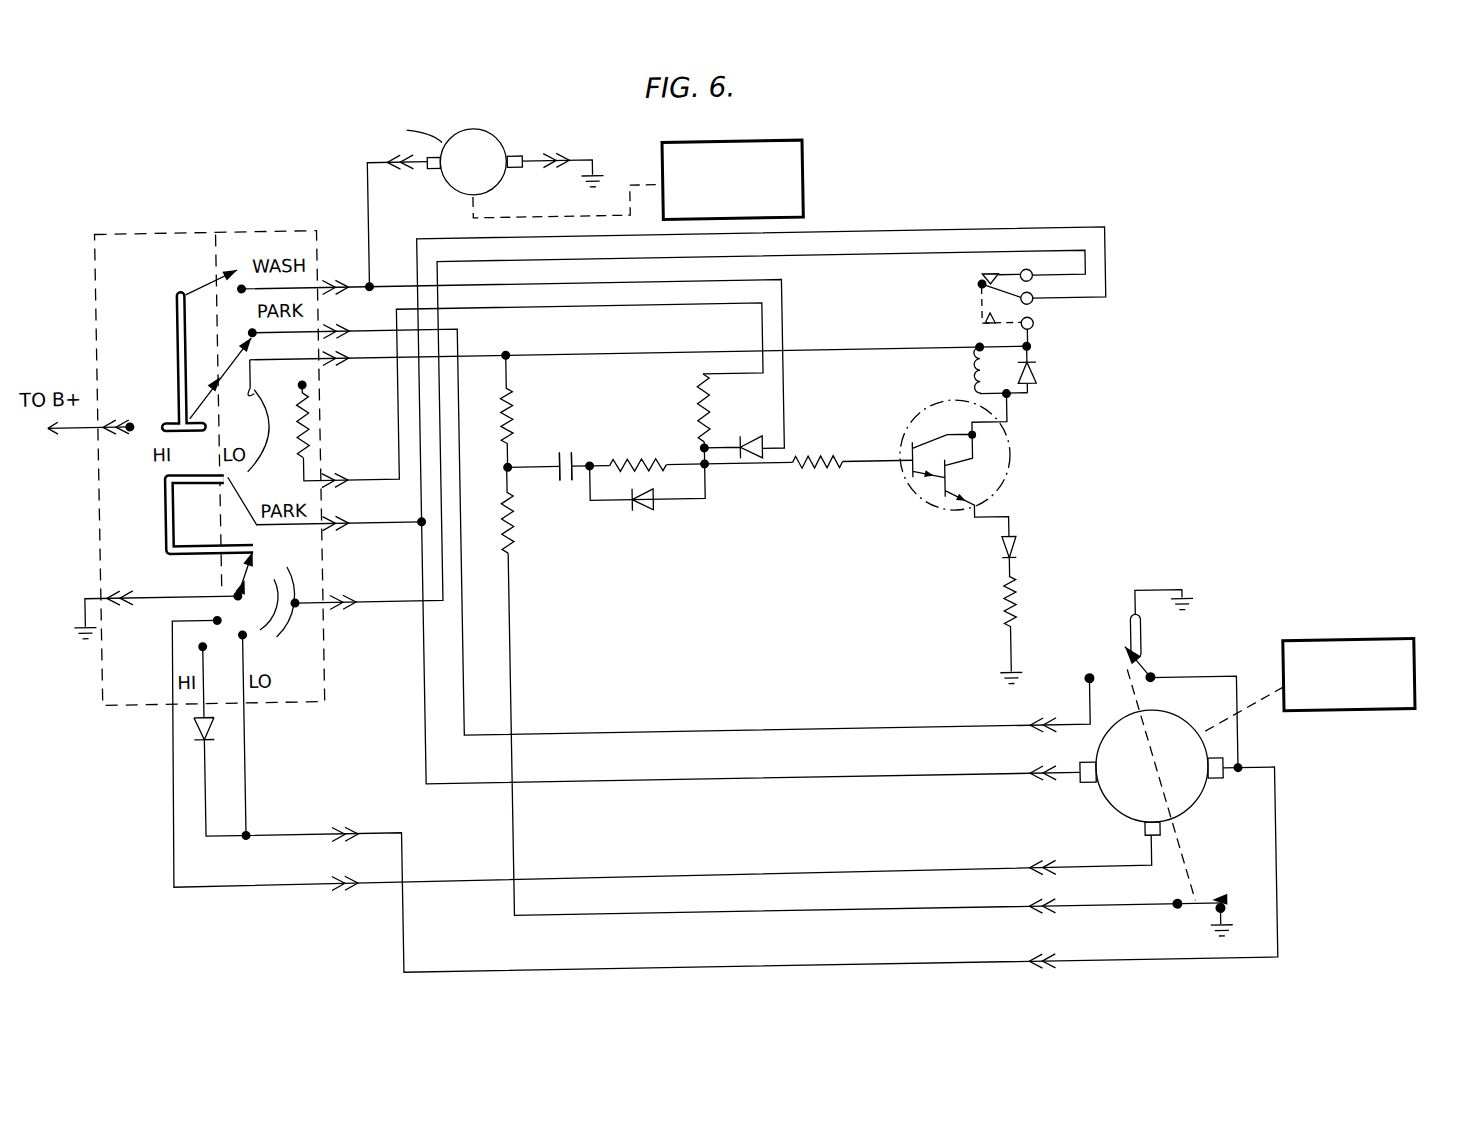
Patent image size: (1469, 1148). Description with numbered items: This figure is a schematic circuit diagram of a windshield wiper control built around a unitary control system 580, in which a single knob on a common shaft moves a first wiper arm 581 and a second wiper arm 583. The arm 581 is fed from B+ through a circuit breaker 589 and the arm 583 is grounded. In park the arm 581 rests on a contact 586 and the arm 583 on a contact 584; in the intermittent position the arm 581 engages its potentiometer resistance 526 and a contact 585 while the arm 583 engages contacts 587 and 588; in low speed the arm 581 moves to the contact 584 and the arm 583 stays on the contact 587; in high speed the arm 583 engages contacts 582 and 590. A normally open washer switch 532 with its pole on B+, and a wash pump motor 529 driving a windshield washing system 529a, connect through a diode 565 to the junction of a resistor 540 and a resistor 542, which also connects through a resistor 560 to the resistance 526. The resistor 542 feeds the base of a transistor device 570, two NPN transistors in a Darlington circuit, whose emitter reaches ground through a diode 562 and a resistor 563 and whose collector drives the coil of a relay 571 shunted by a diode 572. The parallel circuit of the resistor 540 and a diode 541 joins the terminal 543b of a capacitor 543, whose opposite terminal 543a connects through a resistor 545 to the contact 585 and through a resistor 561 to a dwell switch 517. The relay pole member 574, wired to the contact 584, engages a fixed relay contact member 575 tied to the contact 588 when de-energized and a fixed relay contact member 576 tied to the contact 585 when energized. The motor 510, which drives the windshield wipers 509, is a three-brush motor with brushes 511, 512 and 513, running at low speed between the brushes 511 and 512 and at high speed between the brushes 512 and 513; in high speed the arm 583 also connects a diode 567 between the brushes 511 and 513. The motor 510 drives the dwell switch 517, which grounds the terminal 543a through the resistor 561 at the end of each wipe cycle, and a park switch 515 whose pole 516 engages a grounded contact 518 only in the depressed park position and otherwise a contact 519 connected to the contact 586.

The windshield wipers 509 is at (1391, 651).
The motor 510 is at (1171, 721).
The brush 511 is at (1213, 788).
The brush 512 is at (1085, 769).
The brush 513 is at (1142, 838).
The park switch 515 is at (1106, 659).
The pole 516 is at (1152, 681).
The dwell switch 517 is at (1189, 911).
The contact 518 is at (1141, 646).
The contact 519 is at (1086, 689).
The potentiometer resistance 526 is at (324, 414).
The wash pump motor 529 is at (500, 184).
The windshield washing system 529a is at (810, 172).
The washer switch 532 is at (210, 276).
The resistor 540 is at (632, 458).
The diode 541 is at (655, 503).
The resistor 542 is at (823, 462).
The capacitor 543 is at (571, 478).
The terminal 543a is at (530, 462).
The terminal 543b is at (590, 462).
The resistor 545 is at (524, 404).
The resistor 560 is at (702, 388).
The resistor 561 is at (525, 535).
The diode 562 is at (1003, 553).
The resistor 563 is at (1006, 604).
The diode 565 is at (765, 445).
The diode 567 is at (192, 722).
The transistor device 570 is at (1012, 474).
The relay 571 is at (979, 360).
The diode 572 is at (1043, 379).
The pole member 574 is at (984, 288).
The fixed relay contact member 575 is at (998, 276).
The fixed relay contact member 576 is at (1037, 326).
The unitary control system 580 is at (174, 223).
The first wiper arm 581 is at (238, 346).
The contact 582 is at (214, 611).
The second wiper arm 583 is at (247, 556).
The contact 584 is at (166, 510).
The contact 585 is at (258, 386).
The contact 586 is at (254, 321).
The contact 587 is at (262, 619).
The contact 588 is at (290, 566).
The circuit breaker 589 is at (156, 392).
The contact 590 is at (199, 638).